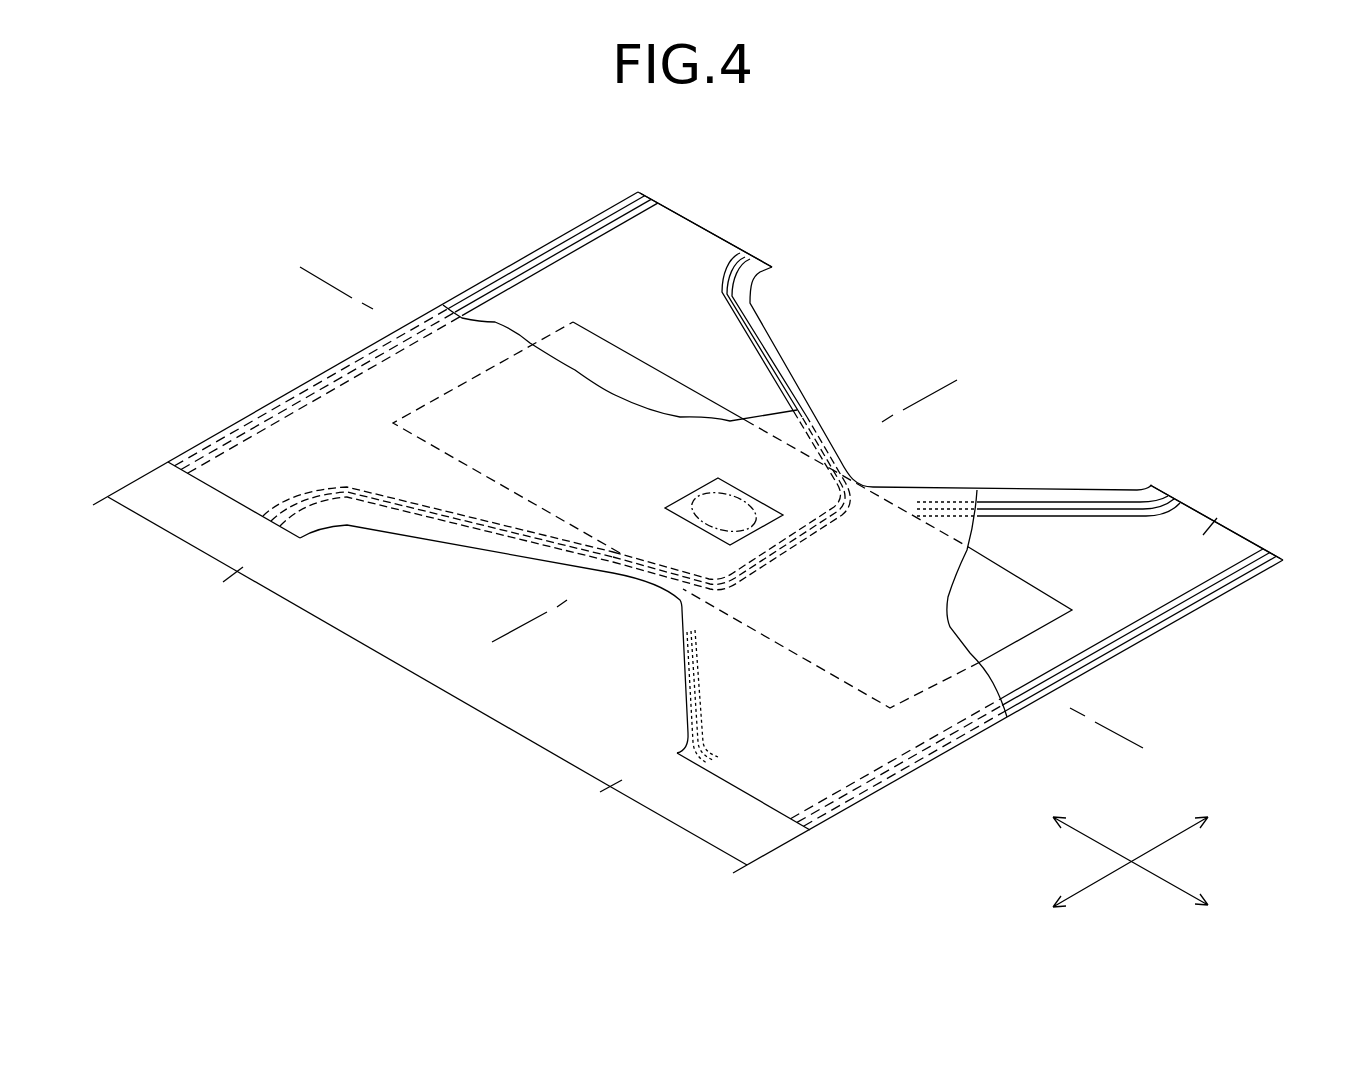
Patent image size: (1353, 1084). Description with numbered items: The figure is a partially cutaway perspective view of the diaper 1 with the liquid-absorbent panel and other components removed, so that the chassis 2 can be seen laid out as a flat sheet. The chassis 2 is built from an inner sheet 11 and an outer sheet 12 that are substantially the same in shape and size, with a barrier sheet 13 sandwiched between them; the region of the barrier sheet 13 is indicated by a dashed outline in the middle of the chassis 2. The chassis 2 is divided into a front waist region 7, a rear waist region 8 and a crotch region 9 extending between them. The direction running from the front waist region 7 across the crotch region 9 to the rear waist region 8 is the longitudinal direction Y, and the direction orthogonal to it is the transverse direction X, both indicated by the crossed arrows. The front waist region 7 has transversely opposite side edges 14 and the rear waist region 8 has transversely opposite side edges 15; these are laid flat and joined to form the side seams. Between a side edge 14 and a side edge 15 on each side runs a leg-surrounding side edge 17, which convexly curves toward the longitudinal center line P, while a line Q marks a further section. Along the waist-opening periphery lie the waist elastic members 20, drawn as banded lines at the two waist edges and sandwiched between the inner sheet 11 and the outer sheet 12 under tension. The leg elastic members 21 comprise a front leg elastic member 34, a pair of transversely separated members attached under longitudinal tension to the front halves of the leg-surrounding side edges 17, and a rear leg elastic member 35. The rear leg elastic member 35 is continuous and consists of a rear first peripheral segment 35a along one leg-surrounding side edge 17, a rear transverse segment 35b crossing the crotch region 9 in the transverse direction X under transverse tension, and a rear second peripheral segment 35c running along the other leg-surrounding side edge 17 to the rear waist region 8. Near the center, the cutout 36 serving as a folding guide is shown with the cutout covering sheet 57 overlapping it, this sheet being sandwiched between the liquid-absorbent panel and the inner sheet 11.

The diaper 1 is at (570, 157).
The chassis 2 is at (606, 186).
The front waist region 7 is at (678, 828).
The rear waist region 8 is at (163, 535).
The crotch region 9 is at (440, 695).
The inner sheet 11 is at (838, 762).
The outer sheet 12 is at (685, 237).
The barrier sheet 13 is at (617, 362).
The side edges of the front waist region 14 is at (753, 778).
The side edges of the rear waist region 15 is at (247, 487).
The leg-surrounding side edges 17 is at (517, 558).
The waist elastic members 20 is at (554, 253).
The leg elastic members 21 is at (580, 618).
The front leg elastic member 34 is at (937, 497).
The rear leg elastic member 35 is at (612, 567).
The rear first peripheral segment 35a is at (423, 518).
The rear transverse segment 35b is at (810, 530).
The rear second peripheral segment 35c is at (767, 350).
The cutout 36 is at (705, 490).
The cutout covering sheet 57 is at (683, 503).
The longitudinal center line P is at (326, 280).
The section line Q is at (930, 392).
The transverse direction X is at (1093, 882).
The longitudinal direction Y is at (1170, 887).